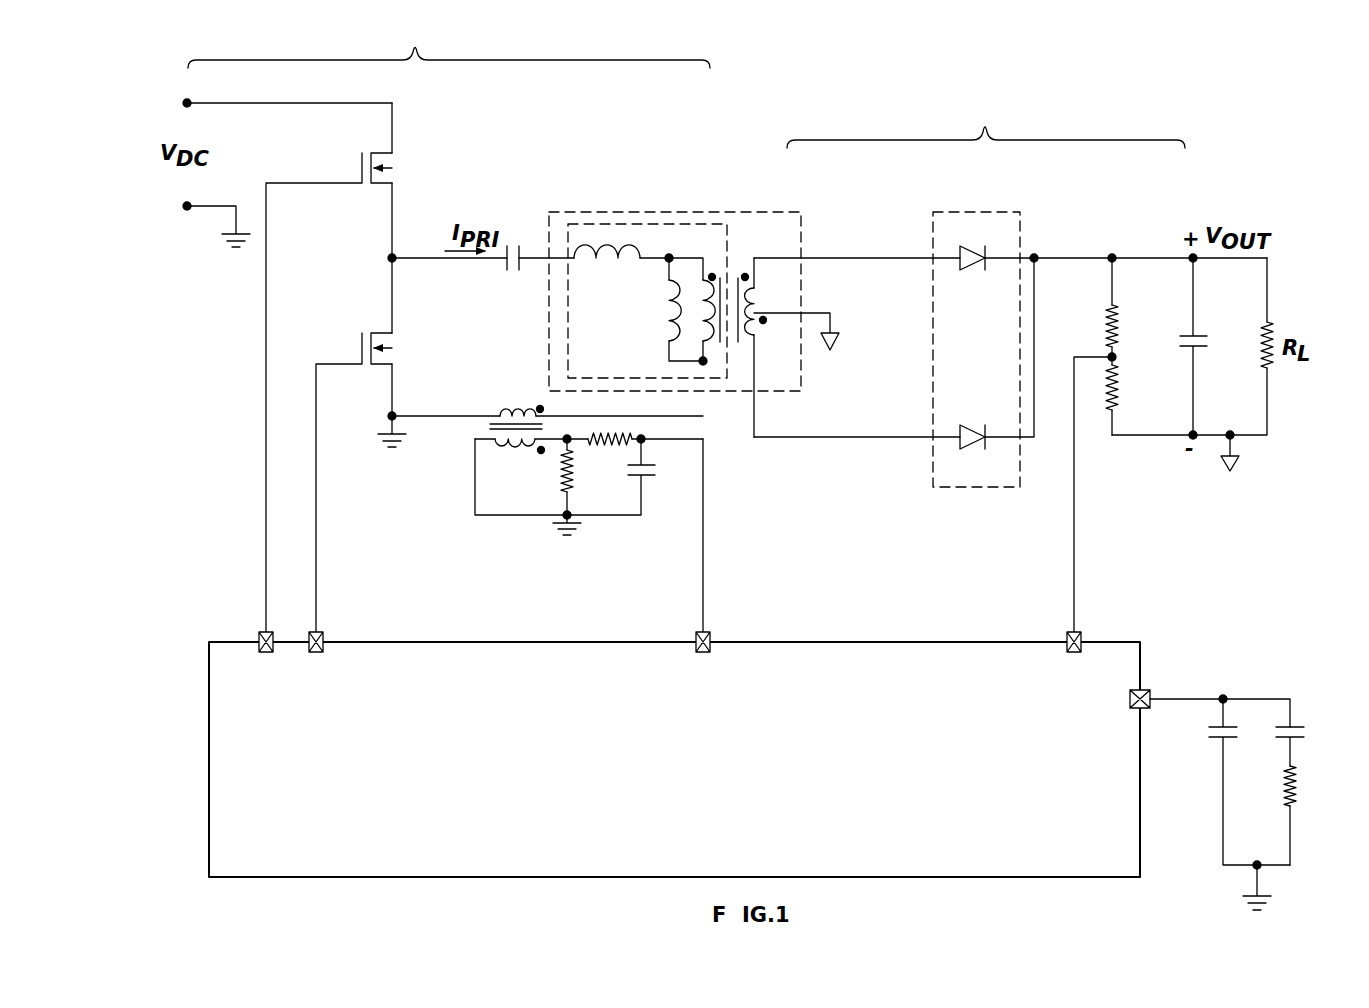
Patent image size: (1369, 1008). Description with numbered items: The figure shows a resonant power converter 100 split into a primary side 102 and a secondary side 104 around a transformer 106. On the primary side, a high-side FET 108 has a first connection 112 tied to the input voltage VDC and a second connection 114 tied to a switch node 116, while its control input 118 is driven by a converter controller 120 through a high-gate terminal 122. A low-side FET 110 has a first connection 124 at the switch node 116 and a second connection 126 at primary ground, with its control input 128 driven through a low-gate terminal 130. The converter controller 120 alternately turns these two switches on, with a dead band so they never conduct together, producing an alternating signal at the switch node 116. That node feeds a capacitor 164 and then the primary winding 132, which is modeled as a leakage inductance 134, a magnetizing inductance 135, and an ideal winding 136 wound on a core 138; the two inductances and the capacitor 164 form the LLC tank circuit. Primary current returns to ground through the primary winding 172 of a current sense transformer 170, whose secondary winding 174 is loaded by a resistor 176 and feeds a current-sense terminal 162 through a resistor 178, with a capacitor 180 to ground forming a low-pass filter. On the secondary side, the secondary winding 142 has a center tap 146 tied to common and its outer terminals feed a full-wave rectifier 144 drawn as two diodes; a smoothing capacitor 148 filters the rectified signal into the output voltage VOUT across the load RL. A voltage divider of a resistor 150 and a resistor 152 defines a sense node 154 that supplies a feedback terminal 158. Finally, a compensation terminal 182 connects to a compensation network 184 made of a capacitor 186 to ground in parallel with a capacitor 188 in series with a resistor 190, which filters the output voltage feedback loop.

The resonant power converter 100 is at (172, 56).
The primary side 102 is at (417, 44).
The secondary side 104 is at (987, 122).
The transformer 106 is at (733, 301).
The high-side FET 108 is at (375, 383).
The low-side FET 110 is at (337, 444).
The first connection 112 is at (394, 118).
The second connection 114 is at (394, 190).
The switch node 116 is at (394, 257).
The control input 118 is at (335, 183).
The converter controller 120 is at (674, 759).
The high-gate terminal 122 is at (262, 634).
The first connection 124 is at (394, 290).
The second connection 126 is at (394, 380).
The control input 128 is at (345, 363).
The low-gate terminal 130 is at (324, 634).
The primary winding 132 is at (647, 272).
The leakage inductance 134 is at (598, 260).
The magnetizing inductance 135 is at (668, 320).
The ideal winding 136 is at (709, 342).
The transformer core 138 is at (740, 262).
The secondary winding 142 is at (766, 298).
The full-wave rectifier 144 is at (1021, 212).
The center tap 146 is at (832, 316).
The smoothing capacitor 148 is at (1195, 334).
The resistor 150 is at (1109, 326).
The resistor 152 is at (1114, 404).
The sense node 154 is at (1114, 358).
The feedback terminal 158 is at (1083, 634).
The current-sense terminal 162 is at (712, 640).
The capacitor 164 is at (515, 245).
The current sense transformer 170 is at (462, 432).
The primary winding 172 is at (505, 410).
The secondary winding 174 is at (492, 452).
The resistor 176 is at (556, 480).
The resistor 178 is at (612, 452).
The capacitor 180 is at (646, 480).
The compensation terminal 182 is at (1151, 695).
The compensation network 184 is at (1259, 756).
The capacitor 186 is at (1216, 740).
The capacitor 188 is at (1297, 720).
The resistor 190 is at (1293, 800).